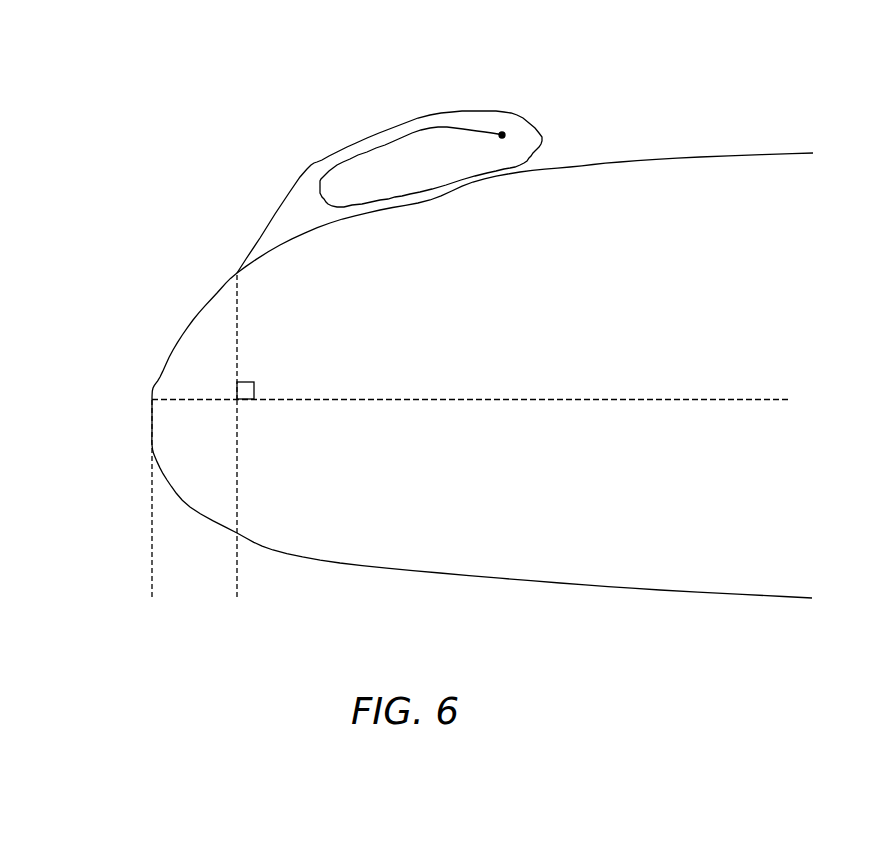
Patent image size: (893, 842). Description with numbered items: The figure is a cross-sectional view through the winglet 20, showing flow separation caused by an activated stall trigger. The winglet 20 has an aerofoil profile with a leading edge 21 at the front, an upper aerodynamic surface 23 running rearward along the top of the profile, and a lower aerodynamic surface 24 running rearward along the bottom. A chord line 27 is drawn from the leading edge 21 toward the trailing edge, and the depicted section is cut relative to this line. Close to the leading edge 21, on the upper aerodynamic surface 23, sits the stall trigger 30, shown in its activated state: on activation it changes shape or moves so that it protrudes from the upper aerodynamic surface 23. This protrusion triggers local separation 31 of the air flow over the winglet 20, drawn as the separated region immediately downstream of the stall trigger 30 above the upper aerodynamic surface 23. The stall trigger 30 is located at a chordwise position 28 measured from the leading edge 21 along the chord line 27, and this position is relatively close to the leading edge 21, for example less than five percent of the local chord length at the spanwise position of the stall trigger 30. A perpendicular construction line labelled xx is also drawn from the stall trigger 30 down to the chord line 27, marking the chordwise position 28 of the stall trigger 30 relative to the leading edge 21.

The winglet 20 is at (633, 124).
The leading edge 21 is at (152, 400).
The upper aerodynamic surface 23 is at (722, 153).
The lower aerodynamic surface 24 is at (660, 587).
The chord line 27 is at (533, 398).
The chordwise position 28 is at (194, 503).
The stall trigger 30 is at (222, 268).
The local separation 31 is at (322, 160).
The perpendicular line xx is at (243, 328).